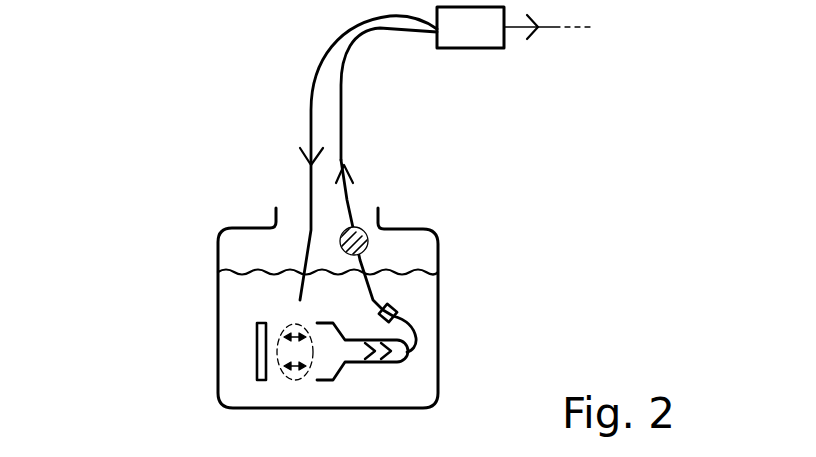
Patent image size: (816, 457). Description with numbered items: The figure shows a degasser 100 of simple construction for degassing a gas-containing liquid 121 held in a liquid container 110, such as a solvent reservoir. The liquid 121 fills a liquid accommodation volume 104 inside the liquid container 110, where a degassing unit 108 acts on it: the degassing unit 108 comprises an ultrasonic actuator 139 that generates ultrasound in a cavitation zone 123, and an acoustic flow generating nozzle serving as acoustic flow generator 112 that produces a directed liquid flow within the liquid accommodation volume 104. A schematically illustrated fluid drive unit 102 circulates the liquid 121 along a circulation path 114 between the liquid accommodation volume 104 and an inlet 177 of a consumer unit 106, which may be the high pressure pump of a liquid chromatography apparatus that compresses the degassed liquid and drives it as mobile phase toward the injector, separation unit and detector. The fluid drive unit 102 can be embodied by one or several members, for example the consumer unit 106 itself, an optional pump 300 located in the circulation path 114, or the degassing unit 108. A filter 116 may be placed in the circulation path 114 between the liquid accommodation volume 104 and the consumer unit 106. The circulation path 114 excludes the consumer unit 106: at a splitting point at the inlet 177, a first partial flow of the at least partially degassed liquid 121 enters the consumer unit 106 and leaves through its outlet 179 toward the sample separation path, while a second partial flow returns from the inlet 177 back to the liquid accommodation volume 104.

The degasser 100 is at (168, 127).
The fluid drive unit 102 is at (381, 242).
The liquid accommodation volume 104 is at (281, 320).
The consumer unit 106 is at (568, 27).
The degassing unit 108 is at (243, 341).
The liquid container 110 is at (438, 302).
The acoustic flow generator 112 is at (355, 326).
The circulation path 114 is at (311, 110).
The filter 116 is at (400, 313).
The gas-containing liquid 121 is at (418, 284).
The cavitation zone 123 is at (283, 378).
The ultrasonic actuator 139 is at (257, 363).
The inlet 177 is at (437, 32).
The outlet 179 is at (508, 28).
The pump 300 is at (357, 226).